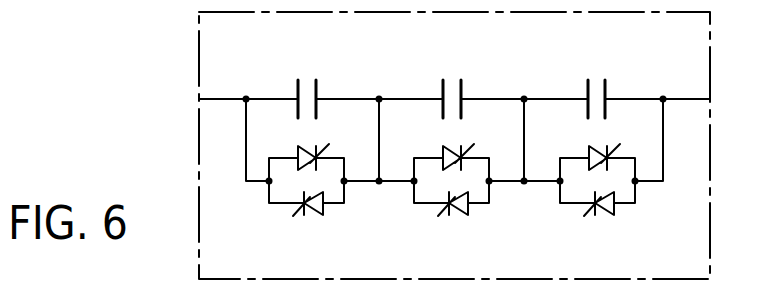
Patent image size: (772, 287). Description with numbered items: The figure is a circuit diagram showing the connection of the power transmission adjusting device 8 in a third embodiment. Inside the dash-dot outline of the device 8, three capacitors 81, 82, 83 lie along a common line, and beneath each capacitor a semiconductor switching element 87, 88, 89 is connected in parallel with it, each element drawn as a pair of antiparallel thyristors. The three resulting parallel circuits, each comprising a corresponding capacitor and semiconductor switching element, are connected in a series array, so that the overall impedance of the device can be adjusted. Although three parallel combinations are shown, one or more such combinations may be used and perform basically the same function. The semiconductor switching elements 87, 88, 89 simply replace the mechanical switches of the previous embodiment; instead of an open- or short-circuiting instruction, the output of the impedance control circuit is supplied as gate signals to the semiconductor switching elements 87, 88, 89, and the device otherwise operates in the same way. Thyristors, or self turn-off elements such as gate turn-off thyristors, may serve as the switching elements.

The power transmission adjusting device 8 is at (712, 58).
The capacitor 81 is at (307, 78).
The capacitor 82 is at (452, 78).
The capacitor 83 is at (597, 78).
The semiconductor switching element 87 is at (330, 208).
The semiconductor switching element 88 is at (475, 208).
The semiconductor switching element 89 is at (621, 208).